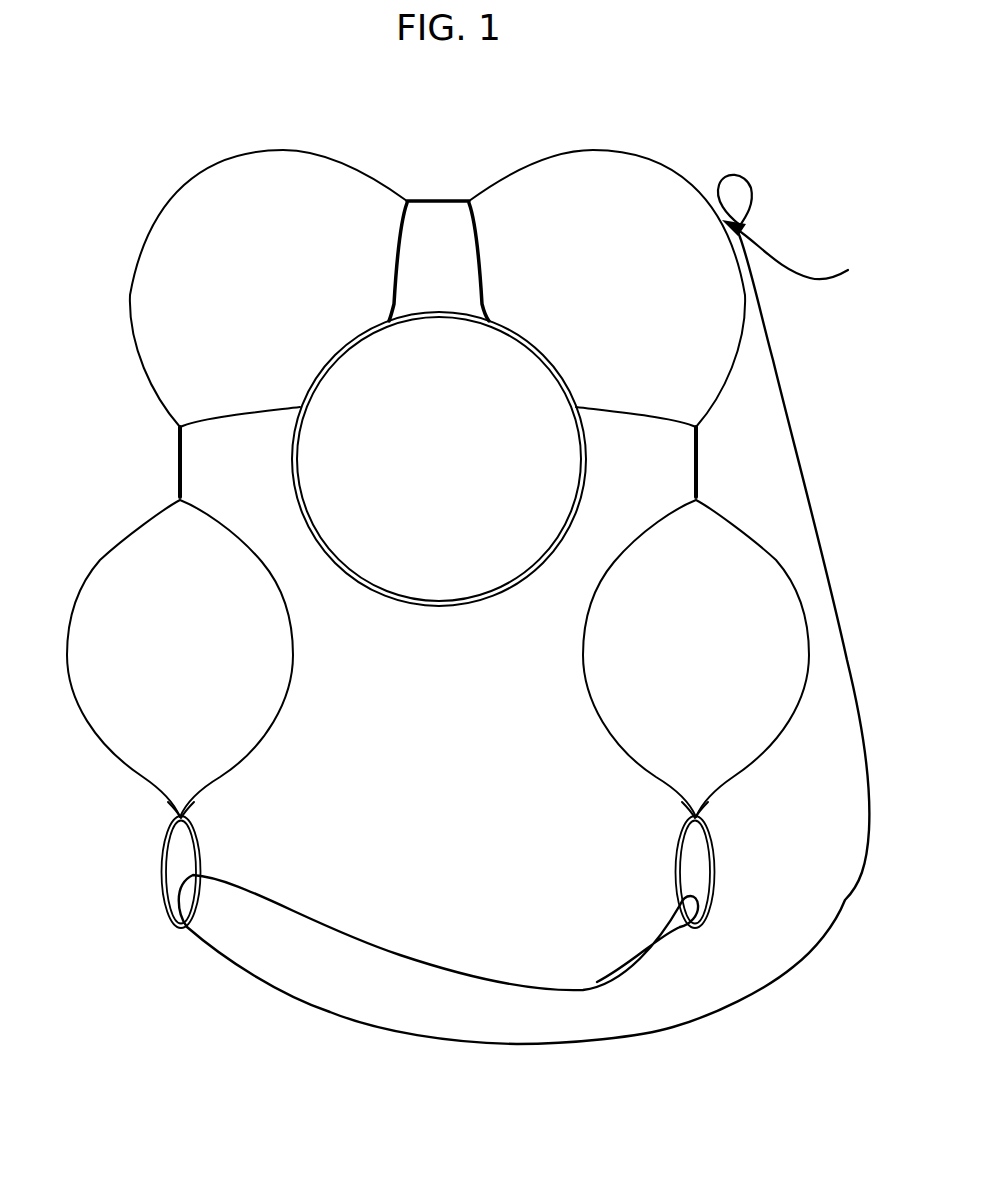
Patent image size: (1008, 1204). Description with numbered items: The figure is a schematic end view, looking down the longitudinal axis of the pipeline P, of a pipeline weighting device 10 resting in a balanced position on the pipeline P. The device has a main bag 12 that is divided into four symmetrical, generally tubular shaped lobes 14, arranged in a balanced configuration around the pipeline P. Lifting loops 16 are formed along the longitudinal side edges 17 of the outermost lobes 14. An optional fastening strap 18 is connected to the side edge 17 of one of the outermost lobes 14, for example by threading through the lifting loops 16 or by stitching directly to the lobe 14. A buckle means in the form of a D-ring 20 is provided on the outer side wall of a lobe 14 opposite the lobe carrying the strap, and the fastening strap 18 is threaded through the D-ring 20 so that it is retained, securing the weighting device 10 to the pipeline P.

The pipeline weighting device 10 is at (124, 231).
The main bag 12 is at (564, 150).
The lobes 14 is at (334, 186).
The lifting loops 16 is at (200, 861).
The longitudinal side edges 17 is at (468, 206).
The fastening straps 18 is at (797, 442).
The D-rings 20 is at (746, 228).
The pipeline P is at (441, 607).